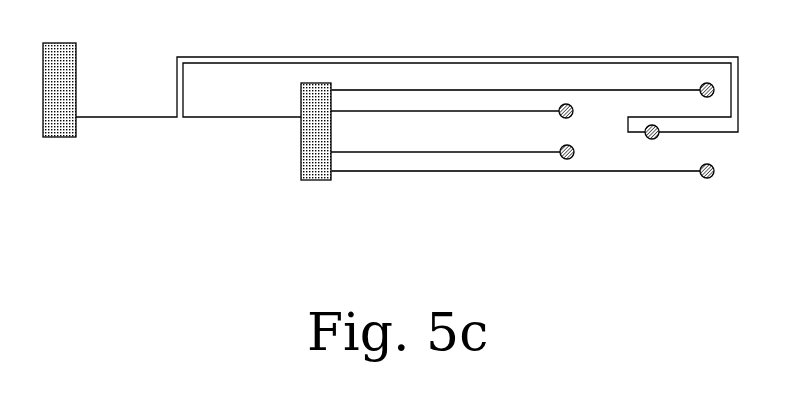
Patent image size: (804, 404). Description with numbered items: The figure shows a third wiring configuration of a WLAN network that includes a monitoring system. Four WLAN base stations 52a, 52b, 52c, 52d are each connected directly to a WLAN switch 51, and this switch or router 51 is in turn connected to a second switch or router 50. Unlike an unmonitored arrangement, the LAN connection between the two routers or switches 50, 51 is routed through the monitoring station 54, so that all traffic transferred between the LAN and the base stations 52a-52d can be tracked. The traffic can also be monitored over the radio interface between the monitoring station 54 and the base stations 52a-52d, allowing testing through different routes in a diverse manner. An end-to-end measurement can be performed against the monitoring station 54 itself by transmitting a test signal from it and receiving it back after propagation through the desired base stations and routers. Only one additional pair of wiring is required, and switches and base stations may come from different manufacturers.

The second switch or router 50 is at (73, 82).
The WLAN switch 51 is at (299, 133).
The WLAN base station 52a is at (712, 80).
The WLAN base station 52b is at (573, 116).
The WLAN base station 52c is at (567, 160).
The WLAN base station 52d is at (707, 180).
The monitoring station 54 is at (660, 137).